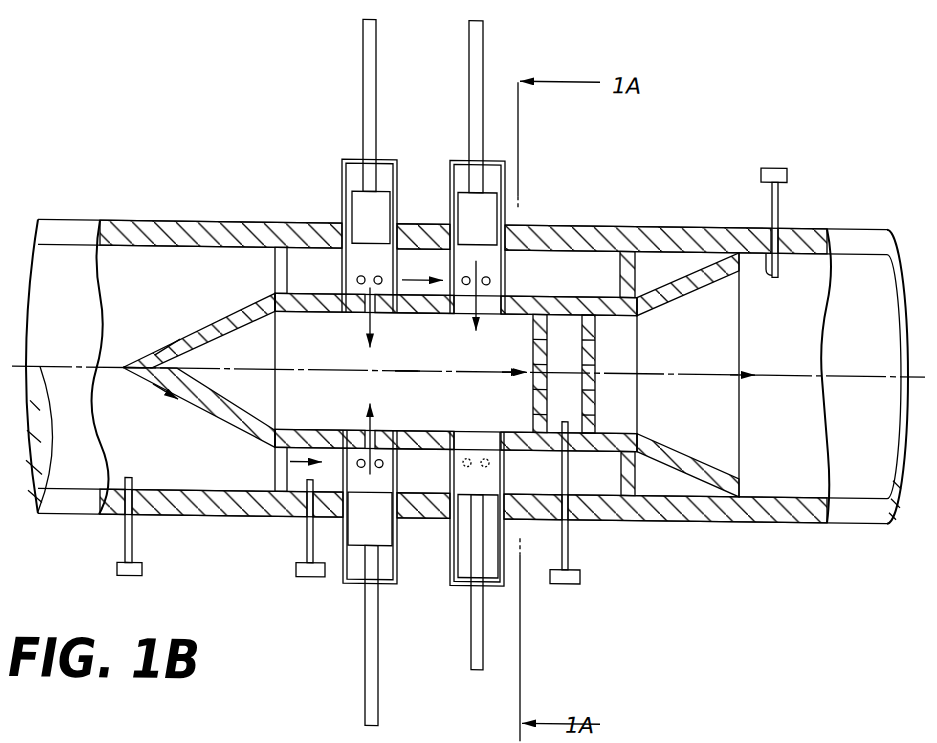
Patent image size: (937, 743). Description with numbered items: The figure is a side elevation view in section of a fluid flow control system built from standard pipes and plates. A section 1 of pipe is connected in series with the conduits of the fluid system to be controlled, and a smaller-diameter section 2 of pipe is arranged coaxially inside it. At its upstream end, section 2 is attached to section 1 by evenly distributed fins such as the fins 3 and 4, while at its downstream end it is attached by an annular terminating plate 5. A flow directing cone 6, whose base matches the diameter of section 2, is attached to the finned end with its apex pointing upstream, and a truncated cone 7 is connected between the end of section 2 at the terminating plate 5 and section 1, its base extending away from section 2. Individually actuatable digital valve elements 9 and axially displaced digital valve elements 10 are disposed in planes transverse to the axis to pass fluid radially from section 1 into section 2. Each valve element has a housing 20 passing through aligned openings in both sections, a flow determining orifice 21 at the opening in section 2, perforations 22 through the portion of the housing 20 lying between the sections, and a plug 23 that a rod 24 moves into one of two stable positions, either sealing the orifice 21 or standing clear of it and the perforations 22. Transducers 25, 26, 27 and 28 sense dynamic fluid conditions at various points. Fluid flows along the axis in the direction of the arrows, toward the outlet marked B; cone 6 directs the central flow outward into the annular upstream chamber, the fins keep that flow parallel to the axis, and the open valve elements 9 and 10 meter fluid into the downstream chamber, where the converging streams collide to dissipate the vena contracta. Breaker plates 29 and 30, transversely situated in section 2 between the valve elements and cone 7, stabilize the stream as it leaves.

The section of pipe 1 is at (206, 217).
The section of pipe 2 is at (330, 426).
The fin 3 is at (275, 258).
The fin 4 is at (275, 452).
The annular terminating plate 5 is at (622, 248).
The flow directing cone 6 is at (212, 328).
The truncated cone 7 is at (670, 280).
The digital valve elements 9 is at (333, 372).
The digital valve elements 10 is at (475, 345).
The housing 20 is at (342, 178).
The flow determining orifice 21 is at (368, 306).
The perforations 22 is at (362, 272).
The plug 23 is at (450, 206).
The rod 24 is at (483, 52).
The transducer 25 is at (128, 476).
The transducer 26 is at (307, 482).
The transducer 27 is at (562, 418).
The transducer 28 is at (772, 240).
The breaker plate 29 is at (533, 352).
The breaker plate 30 is at (596, 326).
The flow direction B is at (762, 373).